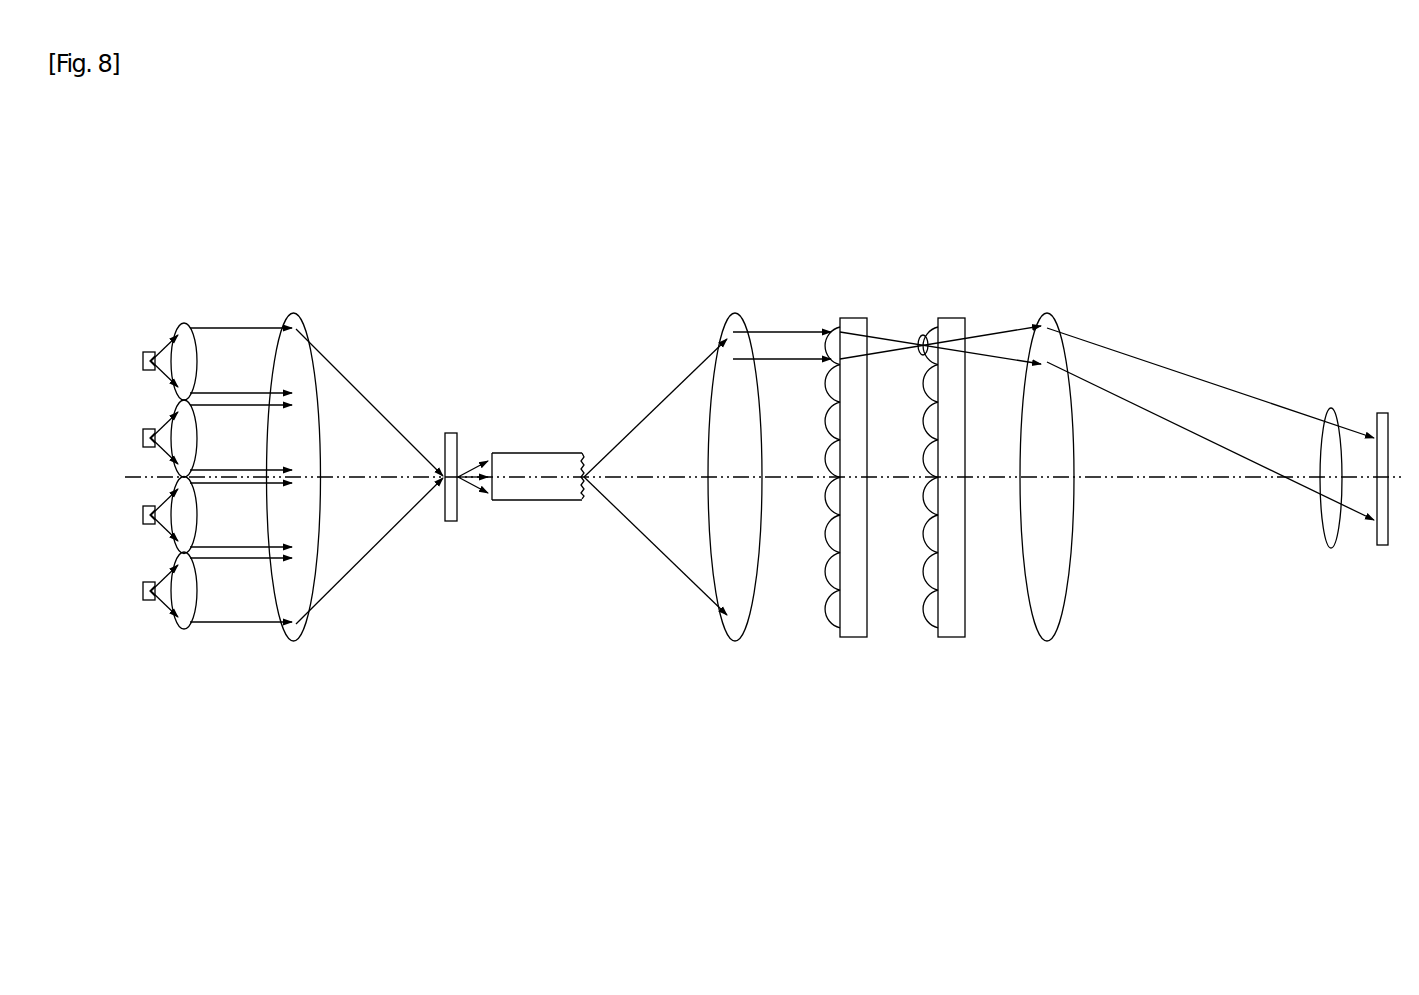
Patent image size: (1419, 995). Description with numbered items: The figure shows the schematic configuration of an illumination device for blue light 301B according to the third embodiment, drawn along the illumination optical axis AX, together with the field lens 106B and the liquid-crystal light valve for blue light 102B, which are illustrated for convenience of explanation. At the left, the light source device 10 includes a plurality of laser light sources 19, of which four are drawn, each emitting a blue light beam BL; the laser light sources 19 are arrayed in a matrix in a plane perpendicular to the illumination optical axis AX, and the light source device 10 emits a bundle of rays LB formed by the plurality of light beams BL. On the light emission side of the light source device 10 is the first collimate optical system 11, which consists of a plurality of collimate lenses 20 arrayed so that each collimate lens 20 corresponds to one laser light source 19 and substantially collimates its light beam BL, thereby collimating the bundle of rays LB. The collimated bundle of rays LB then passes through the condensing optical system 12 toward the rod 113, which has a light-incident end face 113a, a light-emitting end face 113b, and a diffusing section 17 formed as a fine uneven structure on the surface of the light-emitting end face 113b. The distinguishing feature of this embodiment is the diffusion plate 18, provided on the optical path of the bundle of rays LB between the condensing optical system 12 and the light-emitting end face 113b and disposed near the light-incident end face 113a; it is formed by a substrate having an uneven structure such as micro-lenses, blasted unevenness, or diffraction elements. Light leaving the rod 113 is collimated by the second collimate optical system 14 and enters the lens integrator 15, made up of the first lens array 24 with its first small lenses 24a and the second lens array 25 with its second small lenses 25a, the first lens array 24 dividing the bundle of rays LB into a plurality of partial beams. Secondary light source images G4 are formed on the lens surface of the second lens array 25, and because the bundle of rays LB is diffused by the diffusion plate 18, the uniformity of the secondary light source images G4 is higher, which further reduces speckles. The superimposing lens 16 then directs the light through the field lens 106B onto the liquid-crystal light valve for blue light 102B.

The illumination device for blue light 301B is at (1249, 247).
The light source device 10 is at (155, 507).
The laser light source 19 is at (150, 351).
The first collimate optical system 11 is at (197, 499).
The collimate lens 20 is at (192, 343).
The blue light beam BL is at (160, 347).
The bundle of rays LB is at (237, 625).
The condensing optical system 12 is at (297, 630).
The diffusion plate 18 is at (453, 521).
The rod 113 is at (592, 477).
The light-incident end face 113a is at (479, 454).
The light-emitting end face 113b is at (590, 454).
The diffusing section 17 is at (599, 436).
The second collimate optical system 14 is at (738, 633).
The lens integrator 15 is at (931, 508).
The first lens array 24 is at (844, 487).
The first small lens 24a is at (833, 329).
The second lens array 25 is at (941, 487).
The second small lens 25a is at (932, 329).
The secondary light source image G4 is at (917, 337).
The superimposing lens 16 is at (1045, 634).
The illumination optical axis AX is at (1208, 480).
The field lens 106B is at (1333, 549).
The liquid-crystal light valve for blue light 102B is at (1385, 546).